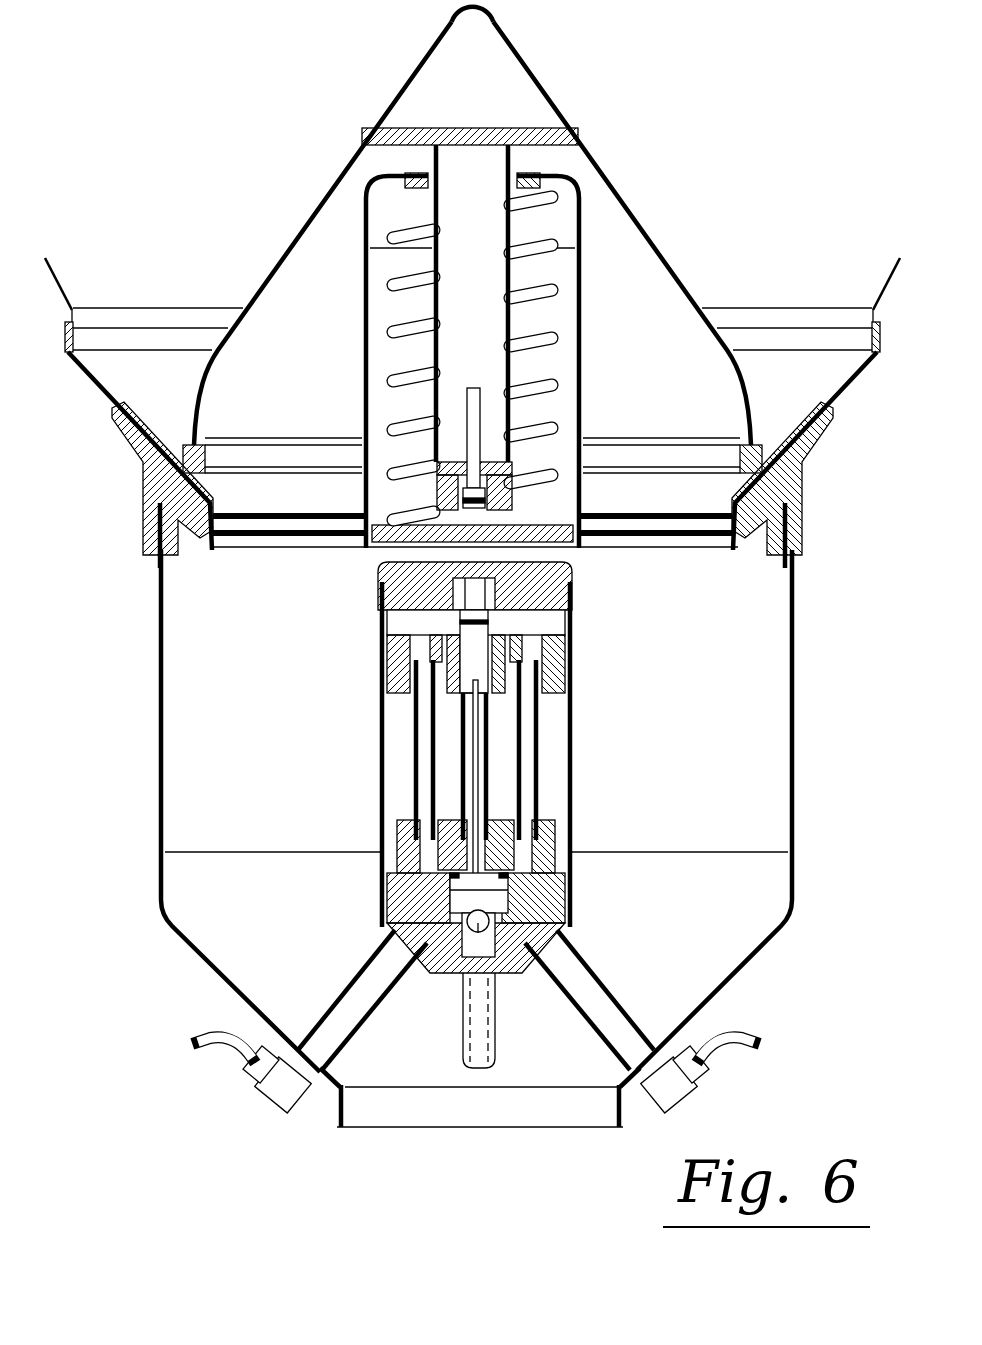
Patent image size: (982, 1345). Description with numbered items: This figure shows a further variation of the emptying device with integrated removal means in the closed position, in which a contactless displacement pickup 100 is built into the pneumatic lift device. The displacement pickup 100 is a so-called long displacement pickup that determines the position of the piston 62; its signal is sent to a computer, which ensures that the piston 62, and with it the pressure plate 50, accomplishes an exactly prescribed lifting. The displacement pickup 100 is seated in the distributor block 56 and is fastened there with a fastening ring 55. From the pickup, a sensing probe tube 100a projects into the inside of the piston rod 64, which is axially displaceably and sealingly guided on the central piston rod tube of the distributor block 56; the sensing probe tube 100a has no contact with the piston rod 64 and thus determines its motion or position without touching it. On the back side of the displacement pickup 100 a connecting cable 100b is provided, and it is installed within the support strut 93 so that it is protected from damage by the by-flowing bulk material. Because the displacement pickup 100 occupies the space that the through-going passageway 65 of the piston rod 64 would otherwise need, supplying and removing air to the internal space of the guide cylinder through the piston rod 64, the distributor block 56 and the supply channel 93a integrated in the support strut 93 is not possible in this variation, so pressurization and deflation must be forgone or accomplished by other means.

The pressure plate 50 is at (572, 567).
The fastening ring 55 is at (423, 888).
The distributor block 56 is at (392, 930).
The piston 62 is at (565, 825).
The piston rod 64 is at (483, 724).
The through-going passageway 65 is at (467, 693).
The support strut 93 is at (495, 1012).
The supply channel 93a is at (490, 1030).
The displacement pickup 100 is at (492, 903).
The sensing probe tube 100a is at (489, 756).
The connecting cable 100b is at (545, 935).